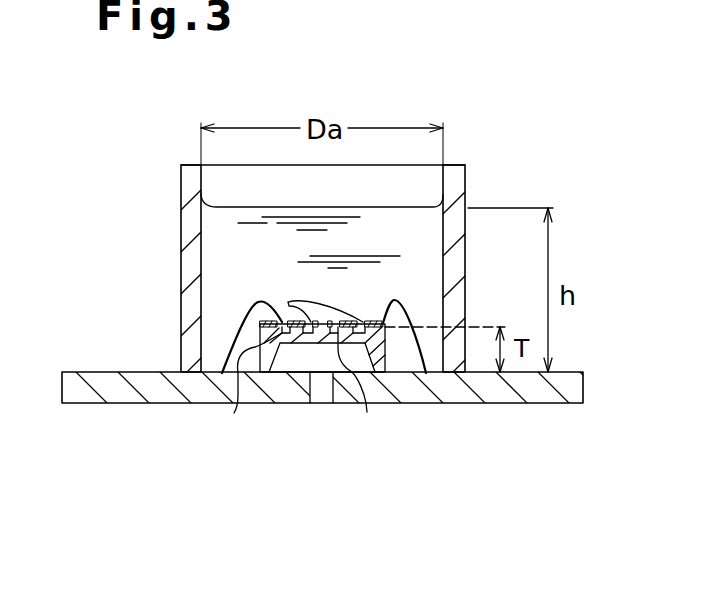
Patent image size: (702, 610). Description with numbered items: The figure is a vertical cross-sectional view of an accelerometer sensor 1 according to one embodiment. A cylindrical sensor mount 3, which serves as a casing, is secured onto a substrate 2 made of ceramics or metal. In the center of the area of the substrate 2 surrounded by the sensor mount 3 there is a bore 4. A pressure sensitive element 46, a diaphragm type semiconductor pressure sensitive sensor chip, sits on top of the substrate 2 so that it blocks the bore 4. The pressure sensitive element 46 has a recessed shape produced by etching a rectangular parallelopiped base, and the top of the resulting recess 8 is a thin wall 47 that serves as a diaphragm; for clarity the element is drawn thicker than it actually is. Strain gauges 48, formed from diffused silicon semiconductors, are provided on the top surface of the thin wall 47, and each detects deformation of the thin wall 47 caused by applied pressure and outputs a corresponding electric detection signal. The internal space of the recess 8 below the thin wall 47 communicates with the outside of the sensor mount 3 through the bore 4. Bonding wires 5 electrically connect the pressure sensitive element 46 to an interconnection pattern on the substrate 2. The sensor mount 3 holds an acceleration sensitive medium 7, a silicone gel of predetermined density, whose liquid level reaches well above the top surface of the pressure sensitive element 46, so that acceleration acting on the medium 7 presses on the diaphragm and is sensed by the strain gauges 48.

The accelerometer sensor 1 is at (513, 133).
The substrate 2 is at (62, 380).
The sensor mount 3 is at (181, 182).
The bore 4 is at (313, 392).
The bonding wires 5 is at (246, 317).
The acceleration sensitive medium 7 is at (362, 208).
The recess 8 is at (303, 355).
The pressure sensitive element 46 is at (245, 392).
The thin wall 47 is at (360, 389).
The strain gauges 48 is at (317, 296).